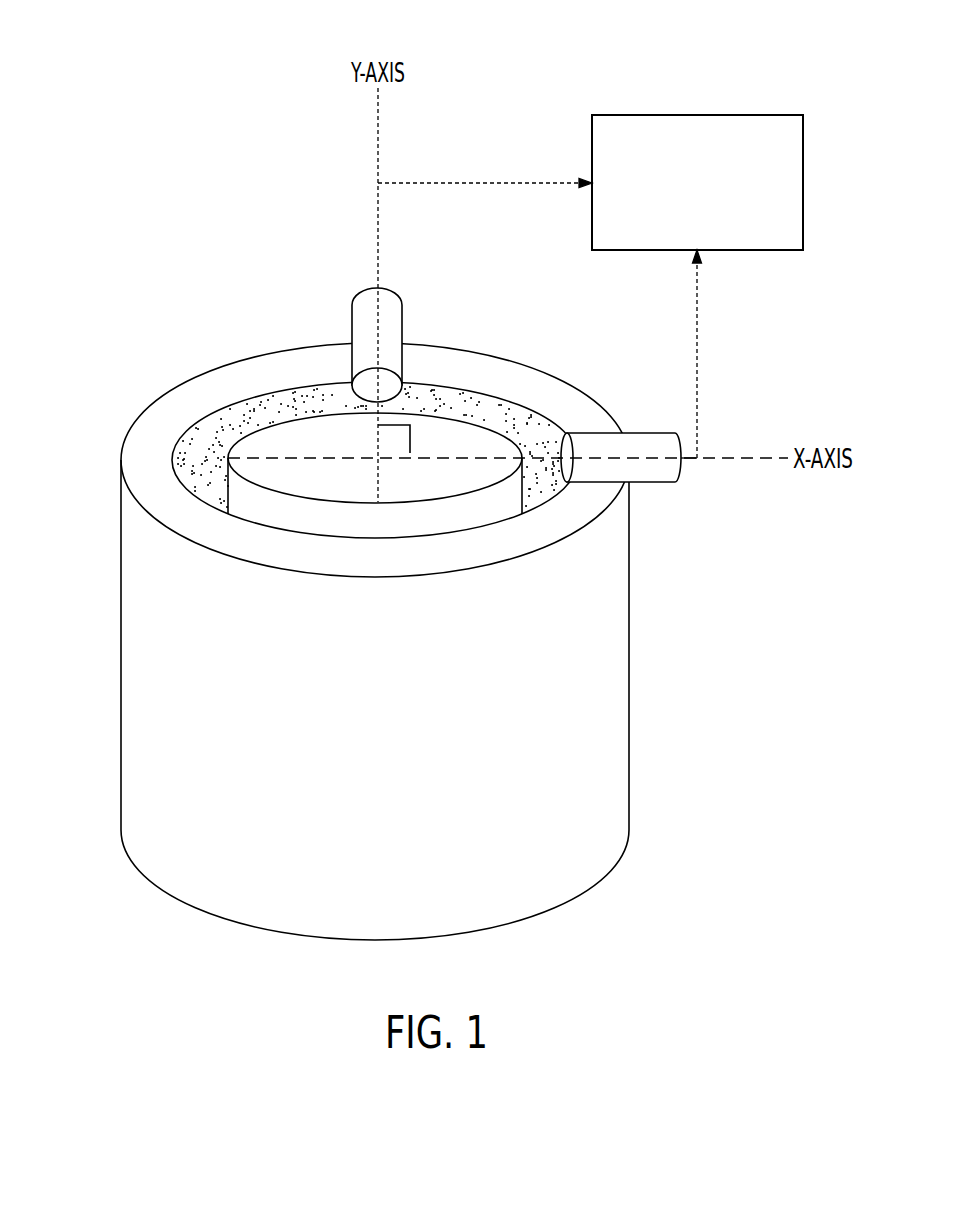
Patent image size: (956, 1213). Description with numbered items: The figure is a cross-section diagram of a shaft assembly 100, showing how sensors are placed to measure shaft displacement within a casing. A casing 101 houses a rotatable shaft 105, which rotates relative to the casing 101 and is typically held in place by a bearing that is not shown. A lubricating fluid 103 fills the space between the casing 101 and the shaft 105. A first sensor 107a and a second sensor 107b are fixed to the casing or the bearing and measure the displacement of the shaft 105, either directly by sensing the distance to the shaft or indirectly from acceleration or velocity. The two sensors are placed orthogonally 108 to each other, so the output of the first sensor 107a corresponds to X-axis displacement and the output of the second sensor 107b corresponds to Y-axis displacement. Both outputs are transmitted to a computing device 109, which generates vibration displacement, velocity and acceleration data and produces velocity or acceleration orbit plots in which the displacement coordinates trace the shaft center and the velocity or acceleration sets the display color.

The shaft assembly 100 is at (97, 126).
The casing 101 is at (387, 717).
The lubricating fluid 103 is at (207, 432).
The rotatable shaft 105 is at (340, 491).
The first sensor 107a is at (665, 483).
The second sensor 107b is at (402, 313).
The orthogonal placement 108 is at (411, 453).
The computing device 109 is at (718, 229).